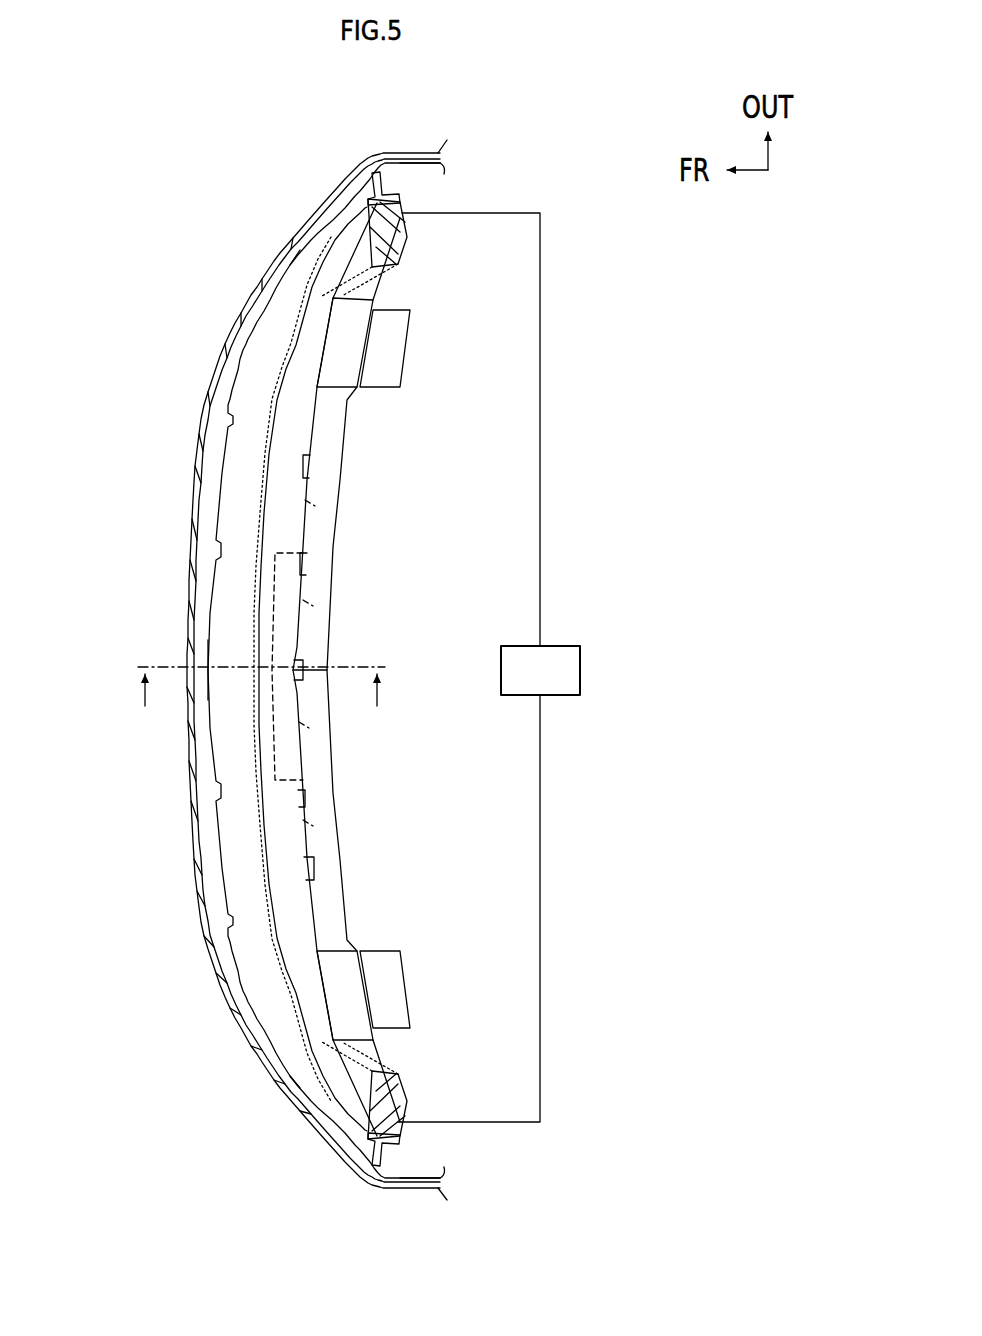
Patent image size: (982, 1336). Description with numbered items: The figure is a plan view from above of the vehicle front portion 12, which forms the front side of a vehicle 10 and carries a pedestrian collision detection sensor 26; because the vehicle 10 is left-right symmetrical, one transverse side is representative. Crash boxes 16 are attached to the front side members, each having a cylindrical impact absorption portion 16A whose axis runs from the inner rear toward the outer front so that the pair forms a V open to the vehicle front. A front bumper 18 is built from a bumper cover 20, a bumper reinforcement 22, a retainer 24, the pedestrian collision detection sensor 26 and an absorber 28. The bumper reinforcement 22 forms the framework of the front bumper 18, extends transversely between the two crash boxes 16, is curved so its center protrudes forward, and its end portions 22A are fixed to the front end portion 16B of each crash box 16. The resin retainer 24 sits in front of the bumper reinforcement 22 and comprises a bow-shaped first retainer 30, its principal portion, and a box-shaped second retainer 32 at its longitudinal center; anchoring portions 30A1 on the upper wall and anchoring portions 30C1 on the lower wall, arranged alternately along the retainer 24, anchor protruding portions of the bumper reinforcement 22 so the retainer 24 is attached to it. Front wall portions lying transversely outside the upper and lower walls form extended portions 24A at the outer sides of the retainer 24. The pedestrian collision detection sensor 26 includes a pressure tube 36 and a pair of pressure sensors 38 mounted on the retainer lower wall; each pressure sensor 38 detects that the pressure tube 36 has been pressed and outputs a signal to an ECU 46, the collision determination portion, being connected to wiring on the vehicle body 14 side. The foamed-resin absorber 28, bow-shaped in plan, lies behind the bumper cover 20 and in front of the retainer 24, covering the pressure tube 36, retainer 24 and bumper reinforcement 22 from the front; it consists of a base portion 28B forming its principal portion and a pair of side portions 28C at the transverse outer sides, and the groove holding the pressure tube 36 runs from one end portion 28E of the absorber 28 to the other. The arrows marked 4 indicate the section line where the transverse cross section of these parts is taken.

The section line of FIG. 4 is at (261, 705).
The vehicle 10 is at (368, 671).
The vehicle front portion 12 is at (257, 249).
The vehicle body 14 is at (479, 296).
The crash box 16 is at (381, 394).
The impact absorption portion 16A is at (390, 358).
The end portion on vehicle front side of crash box 16B is at (345, 318).
The front bumper 18 is at (290, 232).
The bumper cover 20 is at (207, 366).
The bumper reinforcement 22 is at (339, 522).
The end portion of bumper reinforcement 22A is at (397, 258).
The retainer 24 is at (321, 434).
The extended portion 24A is at (378, 175).
The pedestrian collision detection sensor 26 is at (318, 660).
The absorber 28 is at (216, 516).
The base portion 28B is at (218, 628).
The side portion 28C is at (330, 233).
The end portion of absorber 28E is at (432, 157).
The first retainer 30 is at (321, 912).
The anchoring portion 30A1 is at (318, 478).
The anchoring portion 30C1 is at (317, 458).
The second retainer 32 is at (310, 655).
The pressure tube 36 is at (264, 445).
The pressure sensor 38 is at (406, 208).
The ECU 46 is at (582, 671).